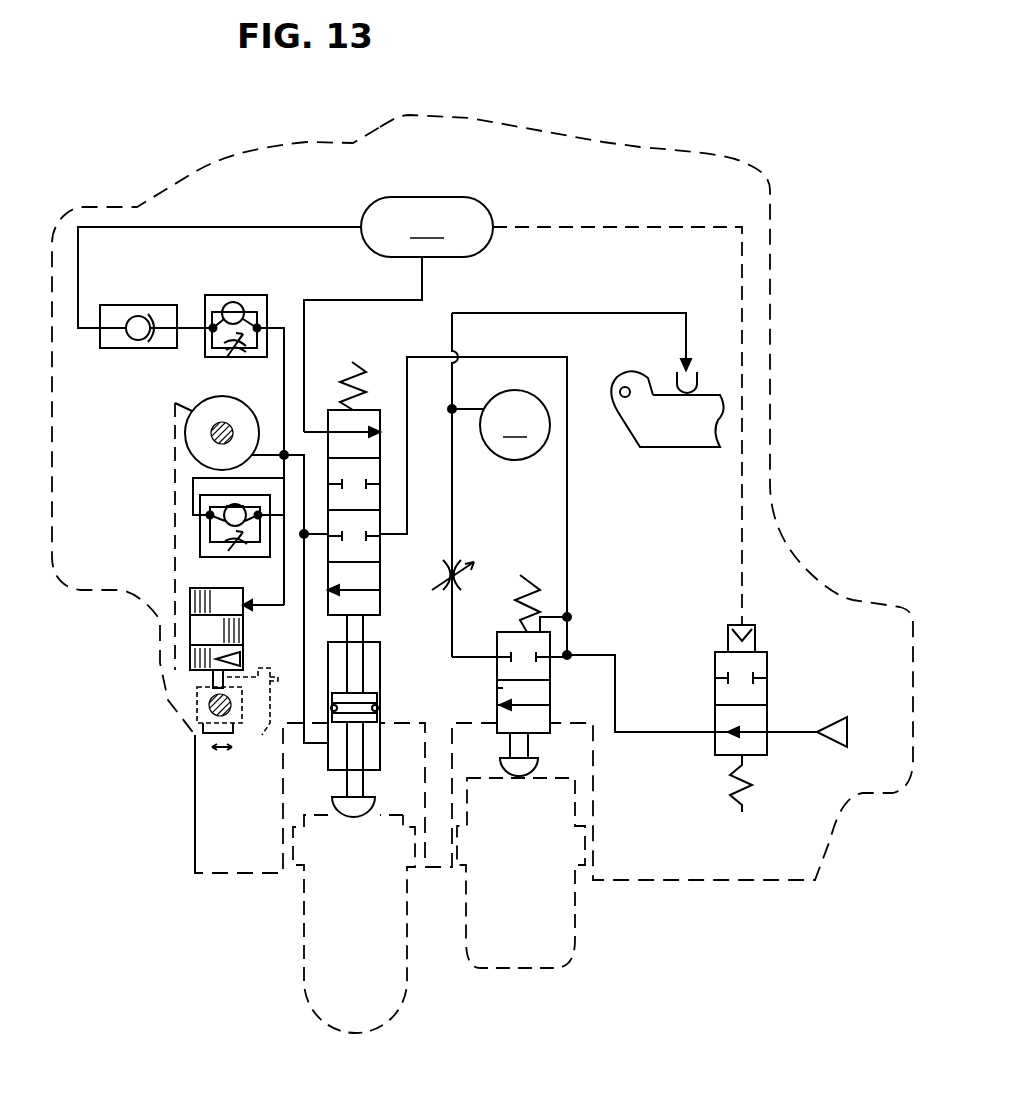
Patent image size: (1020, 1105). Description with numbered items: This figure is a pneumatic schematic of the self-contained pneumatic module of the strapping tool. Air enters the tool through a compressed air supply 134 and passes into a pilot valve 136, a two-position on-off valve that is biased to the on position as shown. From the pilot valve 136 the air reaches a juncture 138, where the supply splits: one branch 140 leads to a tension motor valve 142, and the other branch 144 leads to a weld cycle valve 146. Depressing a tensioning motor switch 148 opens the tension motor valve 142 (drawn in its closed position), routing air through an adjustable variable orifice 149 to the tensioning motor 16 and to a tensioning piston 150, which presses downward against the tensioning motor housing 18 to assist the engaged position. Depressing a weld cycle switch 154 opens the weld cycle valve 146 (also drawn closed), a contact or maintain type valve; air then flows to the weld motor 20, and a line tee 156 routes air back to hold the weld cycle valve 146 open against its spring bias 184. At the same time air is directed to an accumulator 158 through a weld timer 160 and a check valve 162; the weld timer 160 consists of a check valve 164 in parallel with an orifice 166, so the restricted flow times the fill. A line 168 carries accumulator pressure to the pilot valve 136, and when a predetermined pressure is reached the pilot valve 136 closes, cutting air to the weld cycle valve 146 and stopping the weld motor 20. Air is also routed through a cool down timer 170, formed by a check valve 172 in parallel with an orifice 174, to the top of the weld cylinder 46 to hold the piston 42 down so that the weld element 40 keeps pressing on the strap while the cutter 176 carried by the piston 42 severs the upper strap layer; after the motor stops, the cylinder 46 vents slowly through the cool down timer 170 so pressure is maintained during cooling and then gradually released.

The line 168 is at (662, 227).
The accumulator 158 is at (410, 411).
The check valve 162 is at (138, 305).
The weld timer 160 is at (240, 297).
The check valve 164 is at (240, 313).
The orifice 166 is at (224, 352).
The bias 184 is at (352, 362).
The weld cycle valve 146 is at (382, 408).
The tensioning piston 150 is at (697, 384).
The housing 18 is at (700, 429).
The weld motor 20 is at (187, 410).
The tensioning motor 16 is at (499, 425).
The check valve 172 is at (226, 507).
The cool down timer 170 is at (203, 541).
The orifice 174 is at (227, 553).
The branch 144 is at (569, 548).
The variable orifice 149 is at (438, 575).
The juncture 138 is at (572, 652).
The cylinder 46 is at (197, 602).
The tension motor valve 142 is at (497, 681).
The branch 140 is at (568, 658).
The pilot valve 136 is at (767, 667).
The compressed air supply 134 is at (840, 716).
The piston 42 is at (203, 631).
The weld element 40 is at (205, 728).
The cutter 176 is at (198, 743).
The line tee 156 is at (322, 749).
The weld cycle switch 154 is at (318, 996).
The tensioning motor switch 148 is at (562, 958).